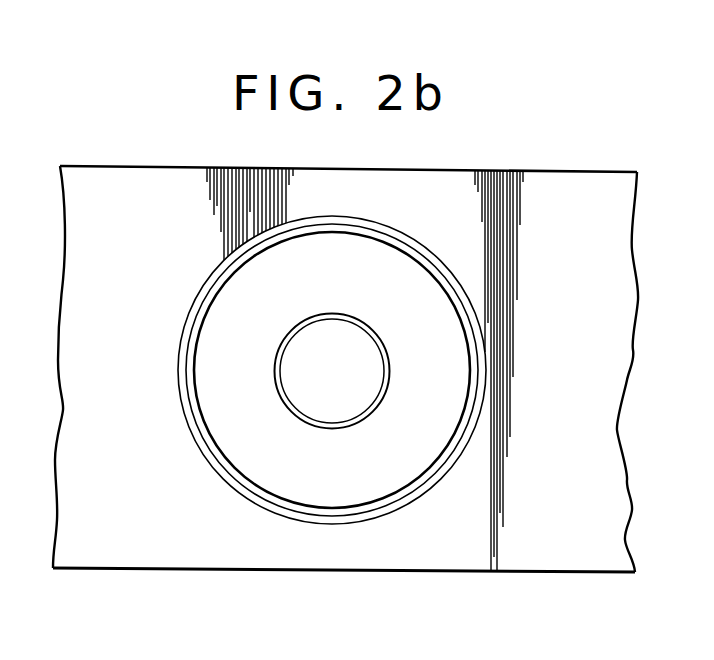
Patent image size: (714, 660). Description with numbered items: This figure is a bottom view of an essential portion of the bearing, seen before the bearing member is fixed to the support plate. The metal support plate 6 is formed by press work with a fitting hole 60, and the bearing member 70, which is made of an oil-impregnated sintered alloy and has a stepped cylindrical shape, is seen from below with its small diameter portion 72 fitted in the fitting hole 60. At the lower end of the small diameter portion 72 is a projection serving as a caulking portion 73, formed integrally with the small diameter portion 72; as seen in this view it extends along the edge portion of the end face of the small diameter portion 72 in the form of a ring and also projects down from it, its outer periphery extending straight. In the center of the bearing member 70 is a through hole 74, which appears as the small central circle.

The support plate 6 is at (527, 573).
The fitting hole 60 is at (332, 423).
The bearing member 70 is at (215, 473).
The small diameter portion 72 is at (342, 500).
The caulking portion 73 is at (405, 498).
The through hole 74 is at (365, 333).